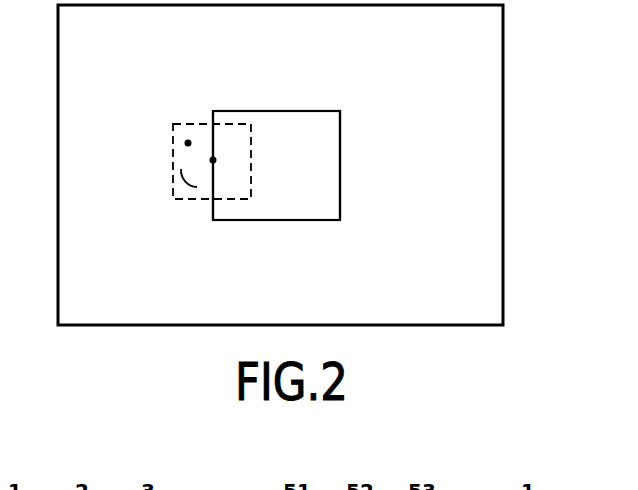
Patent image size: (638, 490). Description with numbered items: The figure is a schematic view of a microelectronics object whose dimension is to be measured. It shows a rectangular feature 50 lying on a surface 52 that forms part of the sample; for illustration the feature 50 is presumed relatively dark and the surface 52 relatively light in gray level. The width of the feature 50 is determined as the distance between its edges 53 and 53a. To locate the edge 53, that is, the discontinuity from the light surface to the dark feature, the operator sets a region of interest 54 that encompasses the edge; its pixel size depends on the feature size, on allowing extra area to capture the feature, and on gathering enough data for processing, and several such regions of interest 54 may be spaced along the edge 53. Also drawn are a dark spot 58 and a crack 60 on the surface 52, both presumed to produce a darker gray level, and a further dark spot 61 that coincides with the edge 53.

The surface 52 is at (490, 40).
The feature 50 is at (327, 177).
The edge 53 is at (214, 138).
The edge 53a is at (340, 200).
The region of interest 54 is at (173, 199).
The dark spot 58 is at (187, 139).
The dark spot 61 is at (214, 159).
The crack 60 is at (172, 188).